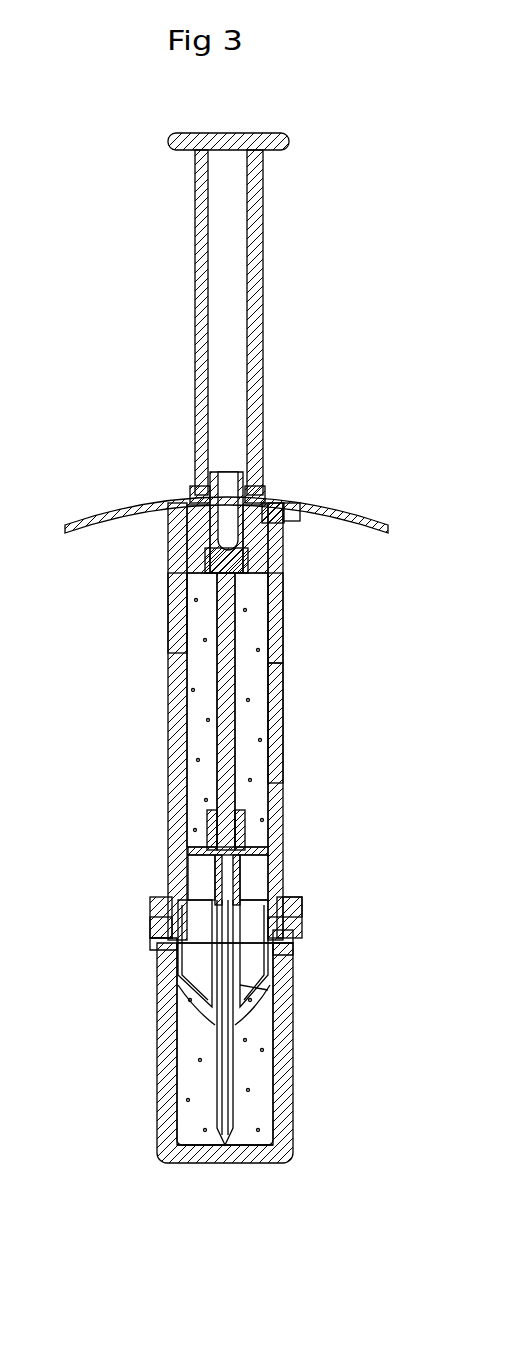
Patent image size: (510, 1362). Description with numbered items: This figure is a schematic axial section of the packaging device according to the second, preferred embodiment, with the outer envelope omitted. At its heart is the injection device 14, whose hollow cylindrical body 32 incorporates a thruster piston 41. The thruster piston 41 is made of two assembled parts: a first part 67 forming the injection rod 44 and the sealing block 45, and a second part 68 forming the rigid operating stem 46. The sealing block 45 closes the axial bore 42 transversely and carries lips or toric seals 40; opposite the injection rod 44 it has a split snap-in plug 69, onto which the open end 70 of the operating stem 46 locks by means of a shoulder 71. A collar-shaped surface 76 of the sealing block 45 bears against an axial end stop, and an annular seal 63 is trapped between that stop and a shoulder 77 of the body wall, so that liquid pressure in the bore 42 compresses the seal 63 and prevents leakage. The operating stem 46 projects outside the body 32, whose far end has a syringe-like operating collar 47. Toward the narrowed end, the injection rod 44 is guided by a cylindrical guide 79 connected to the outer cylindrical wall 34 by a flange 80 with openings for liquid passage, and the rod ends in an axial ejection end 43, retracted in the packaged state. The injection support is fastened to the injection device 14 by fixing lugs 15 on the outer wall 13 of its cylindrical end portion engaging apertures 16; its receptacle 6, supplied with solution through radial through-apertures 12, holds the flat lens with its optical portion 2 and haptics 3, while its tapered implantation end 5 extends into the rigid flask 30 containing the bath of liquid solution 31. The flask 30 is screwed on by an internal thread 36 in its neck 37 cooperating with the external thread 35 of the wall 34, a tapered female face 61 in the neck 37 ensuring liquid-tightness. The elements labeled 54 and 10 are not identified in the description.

The plunger head 54 is at (190, 137).
The operating stem 46 is at (197, 222).
The second part 68 is at (238, 322).
The shoulder 71 is at (203, 493).
The split snap-in plug 69 is at (255, 487).
The end of the operating stem 70 is at (260, 492).
The operating collar 47 is at (95, 522).
The annular seal 63 is at (280, 497).
The sealing block 45 is at (320, 507).
The injection device 14 is at (295, 613).
The shoulder of the wall 77 is at (170, 538).
The lips or toric seals 40 is at (290, 562).
The collar-shaped surface 76 is at (193, 548).
The axial bore 42 is at (180, 610).
The hollow cylindrical body 32 is at (278, 637).
The outer cylindrical wall 34 is at (285, 717).
The injection rod 44 is at (222, 650).
The first part 67 is at (240, 750).
The thruster piston 41 is at (220, 690).
The cylindrical guide 79 is at (215, 827).
The flange 80 is at (283, 865).
The axial ejection end 43 is at (175, 882).
The outer wall 13 is at (178, 905).
The neck 37 is at (152, 906).
The external thread 35 is at (293, 895).
The internal thread 36 is at (305, 905).
The receptacle 6 is at (160, 935).
The apertures 16 is at (158, 953).
The haptics 3 is at (276, 930).
The tapered female face 61 is at (280, 938).
The optical portion 2 is at (282, 955).
The fixing lugs 15 is at (165, 955).
The radial through-apertures 12 is at (190, 980).
The needle 10 is at (223, 1060).
The rigid flask 30 is at (287, 1095).
The bath of liquid solution 31 is at (187, 1105).
The implantation end 5 is at (160, 1150).